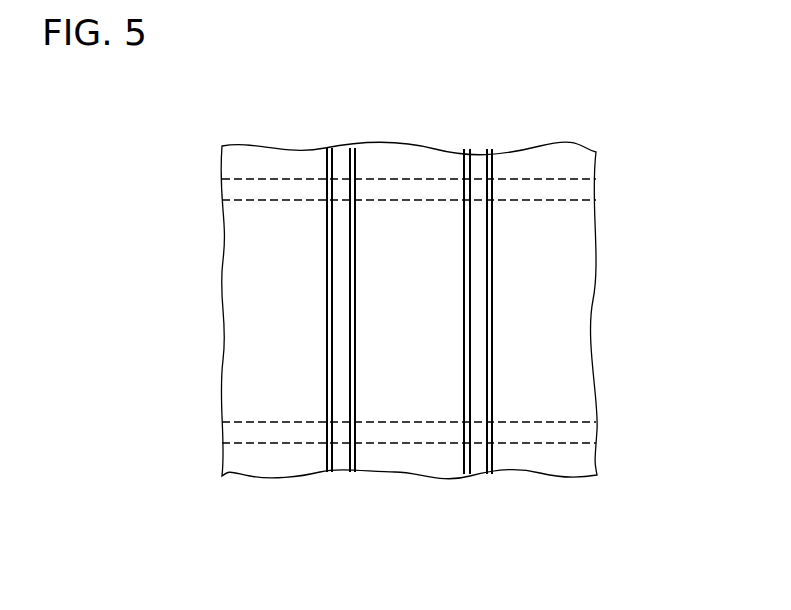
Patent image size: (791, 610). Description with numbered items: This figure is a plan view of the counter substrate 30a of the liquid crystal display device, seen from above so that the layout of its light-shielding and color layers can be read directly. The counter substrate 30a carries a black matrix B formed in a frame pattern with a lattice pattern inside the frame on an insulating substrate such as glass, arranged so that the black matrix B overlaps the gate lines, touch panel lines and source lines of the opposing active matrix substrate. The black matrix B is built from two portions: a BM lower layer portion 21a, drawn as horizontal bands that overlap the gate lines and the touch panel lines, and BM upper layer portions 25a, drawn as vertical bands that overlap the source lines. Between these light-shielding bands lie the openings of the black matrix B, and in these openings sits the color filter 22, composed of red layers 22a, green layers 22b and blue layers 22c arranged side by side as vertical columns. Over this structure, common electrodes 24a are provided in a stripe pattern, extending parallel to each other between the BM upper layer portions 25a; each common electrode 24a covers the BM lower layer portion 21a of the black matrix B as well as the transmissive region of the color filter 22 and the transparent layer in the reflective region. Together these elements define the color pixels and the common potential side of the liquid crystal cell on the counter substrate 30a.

The counter substrate 30a is at (285, 97).
The BM lower layer portion 21a is at (541, 190).
The BM upper layer portion 25a is at (478, 148).
The black matrix B is at (577, 75).
The common electrode 24a is at (370, 462).
The color filter 22 is at (560, 528).
The red layer 22a is at (307, 388).
The green layer 22b is at (433, 393).
The blue layer 22c is at (537, 392).